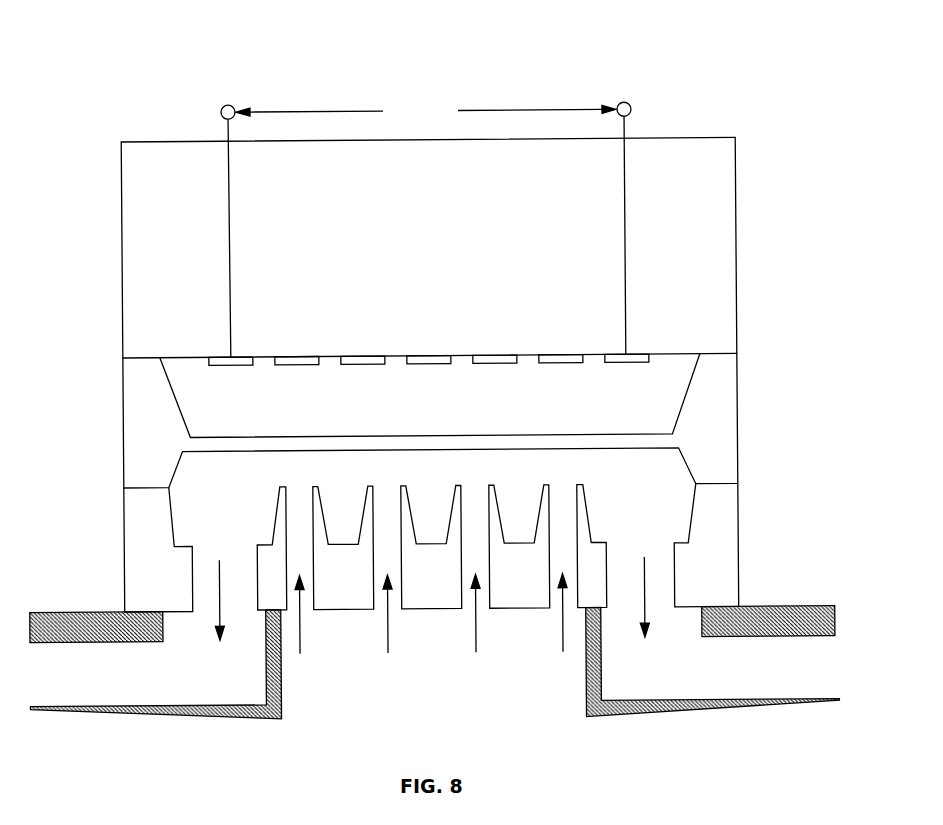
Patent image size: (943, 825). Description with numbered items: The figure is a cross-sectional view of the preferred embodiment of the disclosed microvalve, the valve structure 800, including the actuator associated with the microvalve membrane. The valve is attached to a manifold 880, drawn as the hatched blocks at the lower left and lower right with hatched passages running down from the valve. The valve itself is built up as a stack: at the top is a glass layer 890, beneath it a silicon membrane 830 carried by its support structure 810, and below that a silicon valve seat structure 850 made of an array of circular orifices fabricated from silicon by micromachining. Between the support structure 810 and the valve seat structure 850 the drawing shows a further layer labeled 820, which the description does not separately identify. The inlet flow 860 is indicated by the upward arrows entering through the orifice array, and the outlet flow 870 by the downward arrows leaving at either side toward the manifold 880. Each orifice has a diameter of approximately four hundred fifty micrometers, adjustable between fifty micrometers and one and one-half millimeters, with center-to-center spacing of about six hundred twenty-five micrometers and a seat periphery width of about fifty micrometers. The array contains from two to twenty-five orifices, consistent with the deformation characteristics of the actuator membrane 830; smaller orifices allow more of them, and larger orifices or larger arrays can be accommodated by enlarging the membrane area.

The valve structure 800 is at (431, 411).
The glass layer 890 is at (453, 233).
The support structure 810 is at (455, 420).
The silicon membrane 830 is at (430, 396).
The base layer 820 is at (457, 547).
The valve seat structure 850 is at (446, 544).
The inlet flow 860 is at (431, 628).
The outlet flow 870 is at (423, 615).
The manifold 880 is at (433, 649).